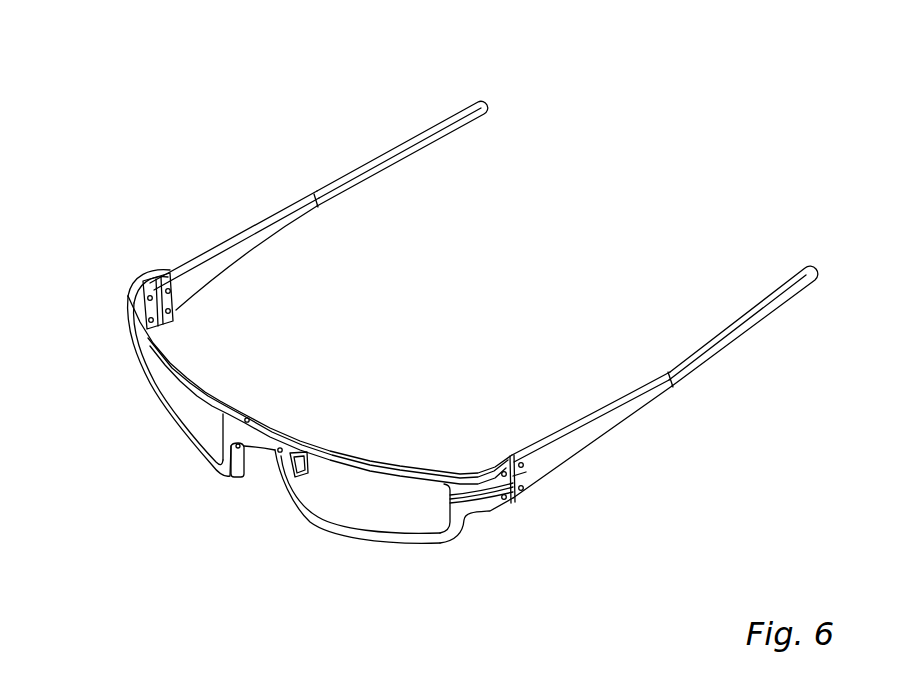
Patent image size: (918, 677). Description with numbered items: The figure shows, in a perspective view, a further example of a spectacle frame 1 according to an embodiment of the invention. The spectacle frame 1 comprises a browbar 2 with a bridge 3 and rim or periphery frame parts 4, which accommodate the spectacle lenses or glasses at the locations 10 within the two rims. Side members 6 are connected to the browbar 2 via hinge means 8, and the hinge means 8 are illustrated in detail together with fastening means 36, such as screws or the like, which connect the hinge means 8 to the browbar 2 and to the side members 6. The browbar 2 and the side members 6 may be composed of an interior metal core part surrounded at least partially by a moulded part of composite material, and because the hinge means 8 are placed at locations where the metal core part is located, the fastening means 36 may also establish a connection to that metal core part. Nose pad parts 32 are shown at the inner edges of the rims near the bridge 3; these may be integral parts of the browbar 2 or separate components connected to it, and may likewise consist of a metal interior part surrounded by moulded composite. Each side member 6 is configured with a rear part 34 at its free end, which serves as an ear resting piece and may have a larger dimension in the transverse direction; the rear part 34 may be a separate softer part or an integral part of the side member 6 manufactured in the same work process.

The spectacle frame 1 is at (224, 203).
The browbar 2 is at (220, 404).
The bridge 3 is at (250, 450).
The rim or periphery frame parts 4 is at (168, 417).
The side members 6 is at (222, 242).
The hinge means 8 is at (173, 294).
The locations for spectacle lenses 10 is at (184, 437).
The nose pad parts 32 is at (302, 462).
The rear part 34 is at (393, 145).
The fastening means 36 is at (162, 272).